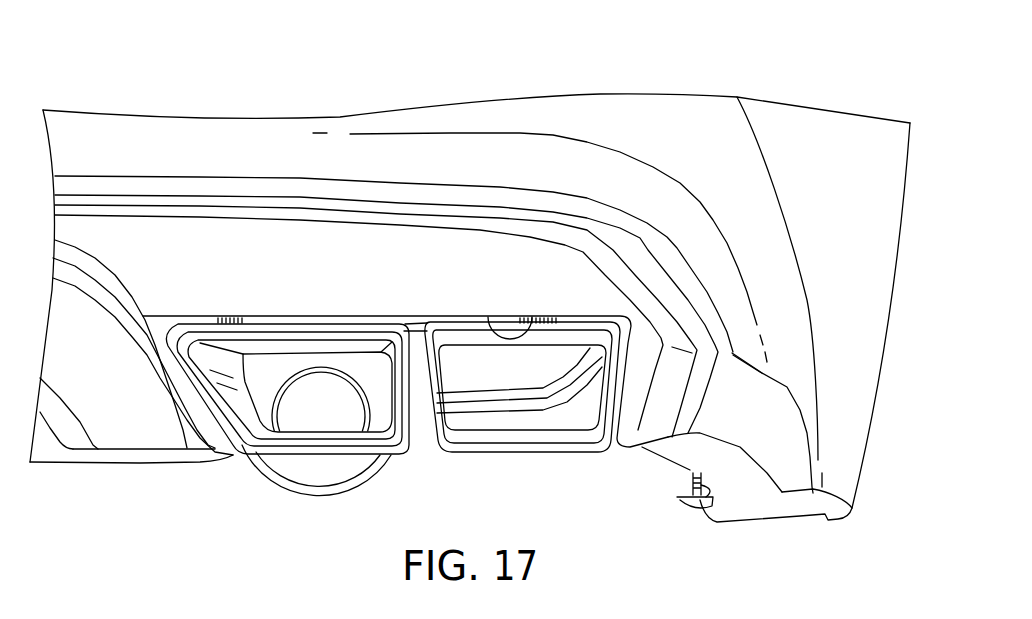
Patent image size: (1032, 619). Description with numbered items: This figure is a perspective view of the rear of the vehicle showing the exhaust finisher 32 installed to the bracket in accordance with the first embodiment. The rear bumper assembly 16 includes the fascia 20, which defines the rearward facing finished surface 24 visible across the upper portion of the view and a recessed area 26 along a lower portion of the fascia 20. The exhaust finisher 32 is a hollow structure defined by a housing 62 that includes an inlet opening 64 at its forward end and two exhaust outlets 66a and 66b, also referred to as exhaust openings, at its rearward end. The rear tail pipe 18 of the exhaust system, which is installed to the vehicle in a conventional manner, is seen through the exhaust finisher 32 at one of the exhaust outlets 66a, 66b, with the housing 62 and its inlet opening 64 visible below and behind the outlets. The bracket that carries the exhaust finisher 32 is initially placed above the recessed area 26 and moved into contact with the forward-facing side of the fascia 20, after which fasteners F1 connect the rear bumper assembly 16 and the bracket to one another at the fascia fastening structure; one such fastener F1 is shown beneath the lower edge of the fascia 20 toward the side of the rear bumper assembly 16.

The rear bumper assembly 16 is at (698, 90).
The fascia 20 is at (554, 118).
The rearward facing finished surface 24 is at (410, 155).
The rear tail pipe 18 is at (312, 366).
The exhaust finisher 32 is at (462, 330).
The recessed area 26 is at (537, 316).
The exhaust outlet 66a is at (345, 440).
The exhaust outlet 66b is at (525, 430).
The housing 62 is at (302, 468).
The inlet opening 64 is at (342, 490).
The fastener F1 is at (690, 484).